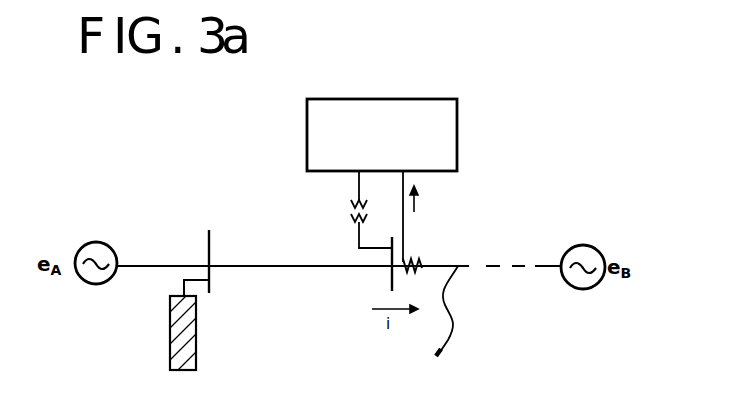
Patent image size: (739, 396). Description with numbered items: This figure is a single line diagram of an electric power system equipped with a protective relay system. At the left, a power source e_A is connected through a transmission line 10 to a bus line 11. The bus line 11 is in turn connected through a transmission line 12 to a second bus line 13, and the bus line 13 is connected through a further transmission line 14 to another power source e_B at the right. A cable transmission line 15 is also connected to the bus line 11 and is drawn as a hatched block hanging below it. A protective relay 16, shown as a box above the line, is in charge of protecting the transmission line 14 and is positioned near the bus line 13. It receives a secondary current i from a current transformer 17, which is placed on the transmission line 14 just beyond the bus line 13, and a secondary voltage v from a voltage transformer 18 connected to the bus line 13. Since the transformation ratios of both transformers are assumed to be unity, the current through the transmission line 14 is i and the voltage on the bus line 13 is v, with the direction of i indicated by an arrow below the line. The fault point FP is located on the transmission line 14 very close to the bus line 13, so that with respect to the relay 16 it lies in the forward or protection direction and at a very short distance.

The transmission line 10 is at (151, 266).
The bus line 11 is at (210, 232).
The transmission line 12 is at (275, 266).
The bus line 13 is at (390, 286).
The transmission line 14 is at (458, 267).
The cable transmission line 15 is at (170, 332).
The protective relay 16 is at (459, 115).
The current transformer 17 is at (420, 259).
The voltage transformer 18 is at (354, 209).